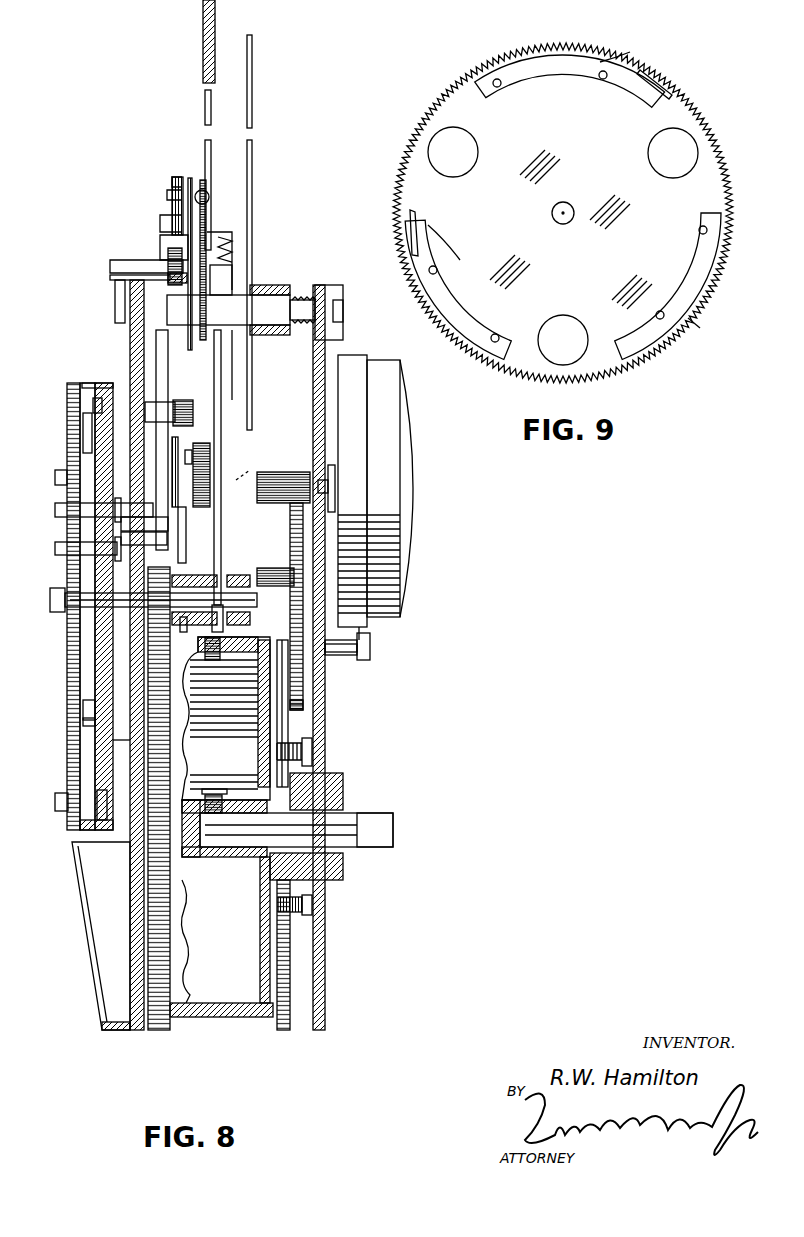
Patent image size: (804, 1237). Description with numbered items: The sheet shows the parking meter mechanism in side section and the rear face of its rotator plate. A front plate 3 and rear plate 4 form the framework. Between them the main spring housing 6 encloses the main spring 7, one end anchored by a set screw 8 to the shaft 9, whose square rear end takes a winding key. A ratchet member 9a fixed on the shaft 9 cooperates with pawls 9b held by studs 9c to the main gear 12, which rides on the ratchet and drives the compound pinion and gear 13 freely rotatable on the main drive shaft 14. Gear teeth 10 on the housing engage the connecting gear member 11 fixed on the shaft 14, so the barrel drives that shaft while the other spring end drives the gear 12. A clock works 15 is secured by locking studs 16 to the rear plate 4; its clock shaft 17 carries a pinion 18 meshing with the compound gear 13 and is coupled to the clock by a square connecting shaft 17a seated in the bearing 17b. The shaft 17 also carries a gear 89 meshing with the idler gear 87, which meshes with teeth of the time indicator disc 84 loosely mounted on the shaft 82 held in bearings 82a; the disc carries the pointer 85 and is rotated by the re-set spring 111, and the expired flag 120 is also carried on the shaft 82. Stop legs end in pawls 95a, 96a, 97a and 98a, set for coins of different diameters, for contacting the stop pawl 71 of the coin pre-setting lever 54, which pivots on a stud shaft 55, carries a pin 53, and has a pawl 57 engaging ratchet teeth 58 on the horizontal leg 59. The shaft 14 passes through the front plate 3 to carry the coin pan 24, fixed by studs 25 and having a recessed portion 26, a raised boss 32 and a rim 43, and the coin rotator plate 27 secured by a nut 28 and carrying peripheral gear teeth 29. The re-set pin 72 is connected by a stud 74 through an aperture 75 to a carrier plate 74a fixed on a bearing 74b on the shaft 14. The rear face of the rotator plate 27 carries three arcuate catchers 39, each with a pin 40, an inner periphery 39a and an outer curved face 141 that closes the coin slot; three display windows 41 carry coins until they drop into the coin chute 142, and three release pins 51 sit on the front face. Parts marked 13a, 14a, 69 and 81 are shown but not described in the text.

In FIG. 8, the front plate 3 is at (128, 1030).
In FIG. 8, the rear plate 4 is at (325, 998).
In FIG. 8, the main spring housing 6 is at (285, 985).
In FIG. 8, the main spring 7 is at (245, 763).
In FIG. 8, the set screw 8 is at (210, 789).
In FIG. 8, the shaft 9 is at (360, 813).
In FIG. 8, the ratchet member 9a is at (320, 780).
In FIG. 8, the pawls 9b is at (312, 744).
In FIG. 8, the studs 9c is at (310, 752).
In FIG. 8, the gear teeth 10 is at (160, 942).
In FIG. 8, the connecting gear member 11 is at (160, 648).
In FIG. 8, the main gear 12 is at (290, 725).
In FIG. 8, the compound pinion and gear 13 is at (290, 565).
In FIG. 8, the gear hub 13a is at (303, 690).
In FIG. 8, the main drive shaft 14 is at (67, 633).
In FIG. 8, the rod 14a is at (330, 655).
In FIG. 8, the clock works 15 is at (413, 575).
In FIG. 8, the locking studs 16 is at (370, 647).
In FIG. 8, the clock shaft 17 is at (238, 472).
In FIG. 8, the connecting shaft 17a is at (328, 484).
In FIG. 8, the bearing 17b is at (335, 510).
In FIG. 8, the pinion 18 is at (305, 472).
In FIG. 8, the coin pan 24 is at (83, 703).
In FIG. 8, the stud members 25 is at (125, 765).
In FIG. 8, the circular recessed portion 26 is at (97, 812).
In FIG. 8, the coin rotator plate 27 is at (67, 675).
In FIG. 9, the coin rotator plate 27 is at (398, 181).
In FIG. 8, the nut 28 is at (50, 600).
In FIG. 9, the gear teeth 29 is at (712, 303).
In FIG. 8, the raised boss portion 32 is at (83, 722).
In FIG. 8, the coin catch members 39 is at (82, 426).
In FIG. 9, the coin catch members 39 is at (603, 90).
In FIG. 9, the inner periphery 39a is at (470, 290).
In FIG. 8, the pin 40 is at (96, 398).
In FIG. 9, the pin 40 is at (672, 92).
In FIG. 9, the coin display windows 41 is at (470, 140).
In FIG. 8, the rim 43 is at (103, 383).
In FIG. 8, the release pins 51 is at (55, 800).
In FIG. 8, the pin 53 is at (55, 548).
In FIG. 8, the coin pre-setting lever 54 is at (55, 478).
In FIG. 8, the stud shaft 55 is at (152, 402).
In FIG. 8, the pawl 57 is at (110, 266).
In FIG. 8, the ratchet teeth 58 is at (110, 279).
In FIG. 8, the leg 59 is at (115, 300).
In FIG. 8, the cover 69 is at (205, 660).
In FIG. 8, the stop pawl 71 is at (160, 250).
In FIG. 8, the pin 72 is at (55, 510).
In FIG. 8, the stud 74 is at (168, 524).
In FIG. 8, the carrier plate 74a is at (186, 555).
In FIG. 8, the bearing 74b is at (180, 625).
In FIG. 8, the aperture 75 is at (132, 450).
In FIG. 8, the bracket 81 is at (210, 232).
In FIG. 8, the shaft 82 is at (238, 305).
In FIG. 8, the bearings 82a is at (343, 303).
In FIG. 8, the time indicator disc 84 is at (209, 197).
In FIG. 8, the indicator pointer 85 is at (215, 20).
In FIG. 8, the idler gear 87 is at (195, 446).
In FIG. 8, the gear 89 is at (221, 505).
In FIG. 8, the pawl 95a is at (160, 222).
In FIG. 8, the pawl 96a is at (189, 178).
In FIG. 8, the pawl 97a is at (167, 195).
In FIG. 8, the pawl 98a is at (172, 182).
In FIG. 8, the re-set spring 111 is at (234, 252).
In FIG. 8, the expired flag 120 is at (252, 88).
In FIG. 9, the outer curved face 141 is at (612, 60).
In FIG. 8, the coin chute 142 is at (80, 889).